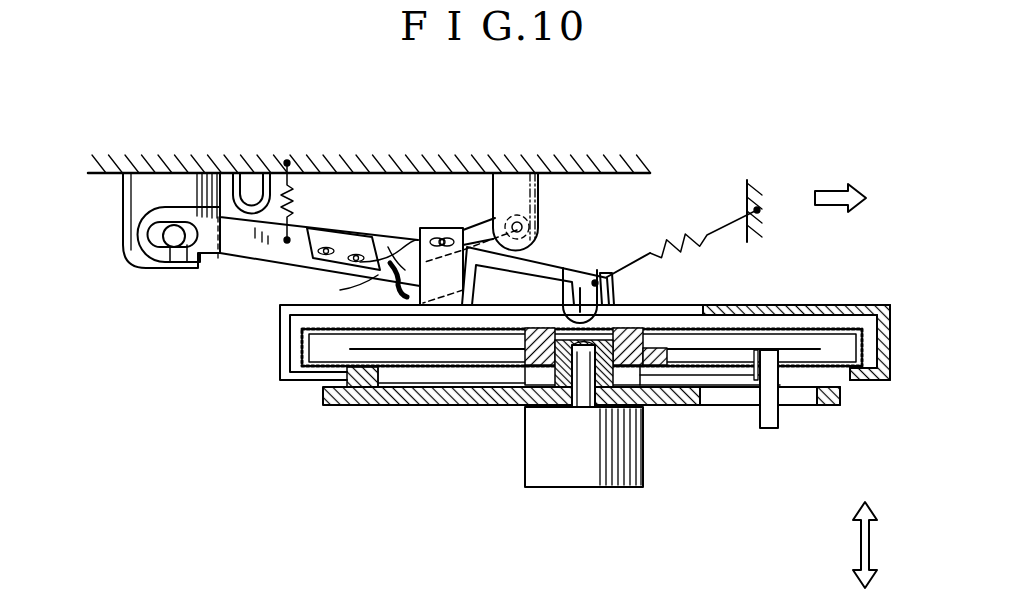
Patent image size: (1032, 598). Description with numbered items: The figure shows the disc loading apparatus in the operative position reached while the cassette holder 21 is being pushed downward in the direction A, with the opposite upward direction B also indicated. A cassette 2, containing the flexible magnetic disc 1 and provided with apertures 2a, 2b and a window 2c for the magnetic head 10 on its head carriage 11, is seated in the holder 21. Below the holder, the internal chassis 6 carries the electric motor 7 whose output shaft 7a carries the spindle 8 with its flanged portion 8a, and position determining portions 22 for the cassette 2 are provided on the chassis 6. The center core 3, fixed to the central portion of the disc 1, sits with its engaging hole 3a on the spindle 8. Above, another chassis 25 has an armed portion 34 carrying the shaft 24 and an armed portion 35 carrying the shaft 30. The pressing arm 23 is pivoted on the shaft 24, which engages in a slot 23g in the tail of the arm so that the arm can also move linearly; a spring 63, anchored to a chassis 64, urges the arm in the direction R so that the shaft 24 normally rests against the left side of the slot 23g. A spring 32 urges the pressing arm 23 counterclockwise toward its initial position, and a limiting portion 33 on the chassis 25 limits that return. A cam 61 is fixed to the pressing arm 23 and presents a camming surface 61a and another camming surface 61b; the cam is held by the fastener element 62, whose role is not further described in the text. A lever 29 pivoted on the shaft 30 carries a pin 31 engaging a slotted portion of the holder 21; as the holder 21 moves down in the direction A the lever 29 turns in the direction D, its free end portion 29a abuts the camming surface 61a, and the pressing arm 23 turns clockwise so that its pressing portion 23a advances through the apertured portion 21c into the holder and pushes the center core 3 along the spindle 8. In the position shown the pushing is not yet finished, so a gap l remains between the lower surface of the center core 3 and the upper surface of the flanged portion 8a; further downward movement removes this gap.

The flexible magnetic disc 1 is at (789, 348).
The cassette 2 is at (743, 320).
The aperture 2a is at (530, 307).
The aperture 2b is at (652, 405).
The window 2c is at (718, 405).
The center core 3 is at (625, 303).
The engaging hole 3a is at (608, 290).
The internal chassis 6 is at (390, 405).
The electric motor 7 is at (588, 473).
The output shaft 7a is at (582, 413).
The spindle 8 is at (527, 408).
The flanged portion 8a is at (503, 405).
The magnetic head 10 is at (773, 388).
The head carriage 11 is at (769, 428).
The cassette holder 21 is at (452, 226).
The apertured portion 21c is at (685, 305).
The position determining portion 22 is at (337, 375).
The pressing arm 23 is at (231, 250).
The pressing portion 23a is at (578, 307).
The slot 23g is at (176, 248).
The shaft 24 is at (172, 247).
The chassis 25 is at (164, 160).
The lever 29 is at (478, 228).
The free end portion 29a is at (420, 230).
The shaft 30 is at (517, 207).
The pin 31 is at (438, 226).
The spring 32 is at (300, 170).
The limiting portion 33 is at (245, 170).
The armed portion 34 is at (136, 196).
The armed portion 35 is at (530, 198).
The cam 61 is at (360, 260).
The camming surface 61a is at (388, 247).
The camming surface 61b is at (340, 290).
The contact plate 62 is at (333, 250).
The spring 63 is at (672, 240).
The chassis 64 is at (757, 182).
The direction D is at (400, 262).
The direction R is at (840, 179).
The direction A is at (881, 561).
The direction B is at (877, 542).
The gap l is at (478, 405).